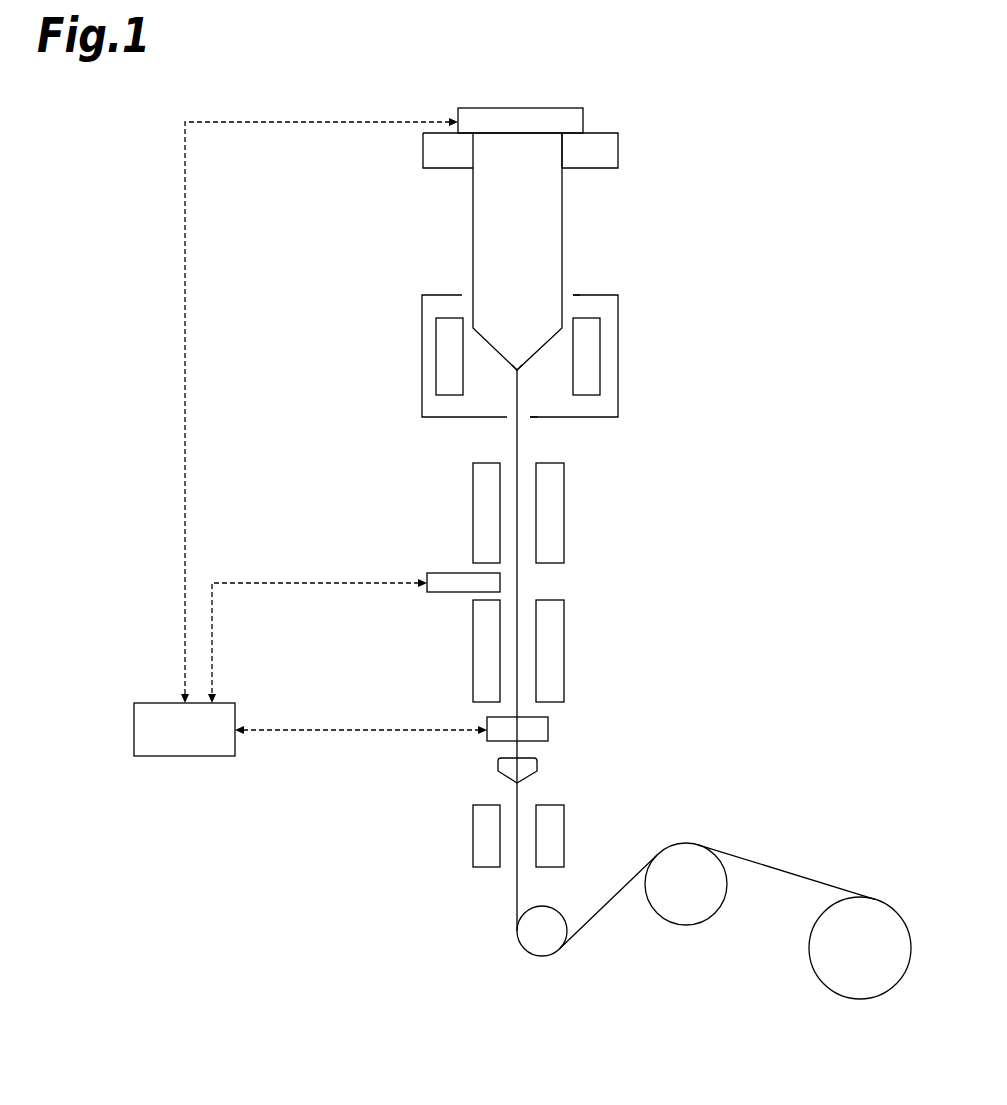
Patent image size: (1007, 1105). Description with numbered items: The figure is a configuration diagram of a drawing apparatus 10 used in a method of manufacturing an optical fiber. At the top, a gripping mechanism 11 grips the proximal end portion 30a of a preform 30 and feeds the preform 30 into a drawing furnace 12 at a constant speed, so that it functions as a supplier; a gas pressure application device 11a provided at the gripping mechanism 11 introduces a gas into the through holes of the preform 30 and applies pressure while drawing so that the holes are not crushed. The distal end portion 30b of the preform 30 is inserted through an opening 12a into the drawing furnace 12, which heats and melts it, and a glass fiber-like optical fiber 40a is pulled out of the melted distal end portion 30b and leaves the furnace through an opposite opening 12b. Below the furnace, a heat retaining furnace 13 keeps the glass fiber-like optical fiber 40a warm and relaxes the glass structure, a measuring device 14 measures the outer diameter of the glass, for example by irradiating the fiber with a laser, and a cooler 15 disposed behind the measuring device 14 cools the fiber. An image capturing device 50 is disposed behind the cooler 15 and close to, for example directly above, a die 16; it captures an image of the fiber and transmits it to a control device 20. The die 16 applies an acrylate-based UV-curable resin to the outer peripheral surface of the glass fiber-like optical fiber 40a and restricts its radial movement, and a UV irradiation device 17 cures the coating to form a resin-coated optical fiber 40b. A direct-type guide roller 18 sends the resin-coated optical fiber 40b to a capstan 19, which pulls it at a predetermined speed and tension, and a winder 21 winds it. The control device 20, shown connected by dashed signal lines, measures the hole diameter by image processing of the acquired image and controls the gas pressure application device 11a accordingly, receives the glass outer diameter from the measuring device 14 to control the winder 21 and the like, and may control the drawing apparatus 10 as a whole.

The drawing apparatus 10 is at (366, 214).
The gripping mechanism 11 is at (618, 147).
The gas pressure application device 11a is at (583, 121).
The preform 30 is at (563, 230).
The proximal end portion 30a is at (563, 150).
The distal end portion 30b is at (507, 363).
The drawing furnace 12 is at (618, 335).
The opening 12a is at (573, 295).
The opening 12b is at (530, 417).
The heat retaining furnace 13 is at (564, 509).
The measuring device 14 is at (443, 573).
The cooler 15 is at (564, 650).
The die 16 is at (537, 767).
The UV irradiation device 17 is at (564, 830).
The direct-type guide roller 18 is at (543, 950).
The capstan 19 is at (690, 915).
The control device 20 is at (187, 756).
The winder 21 is at (860, 990).
The glass fiber-like optical fiber 40a is at (517, 440).
The resin-coated optical fiber 40b is at (517, 897).
The image capturing device 50 is at (548, 728).